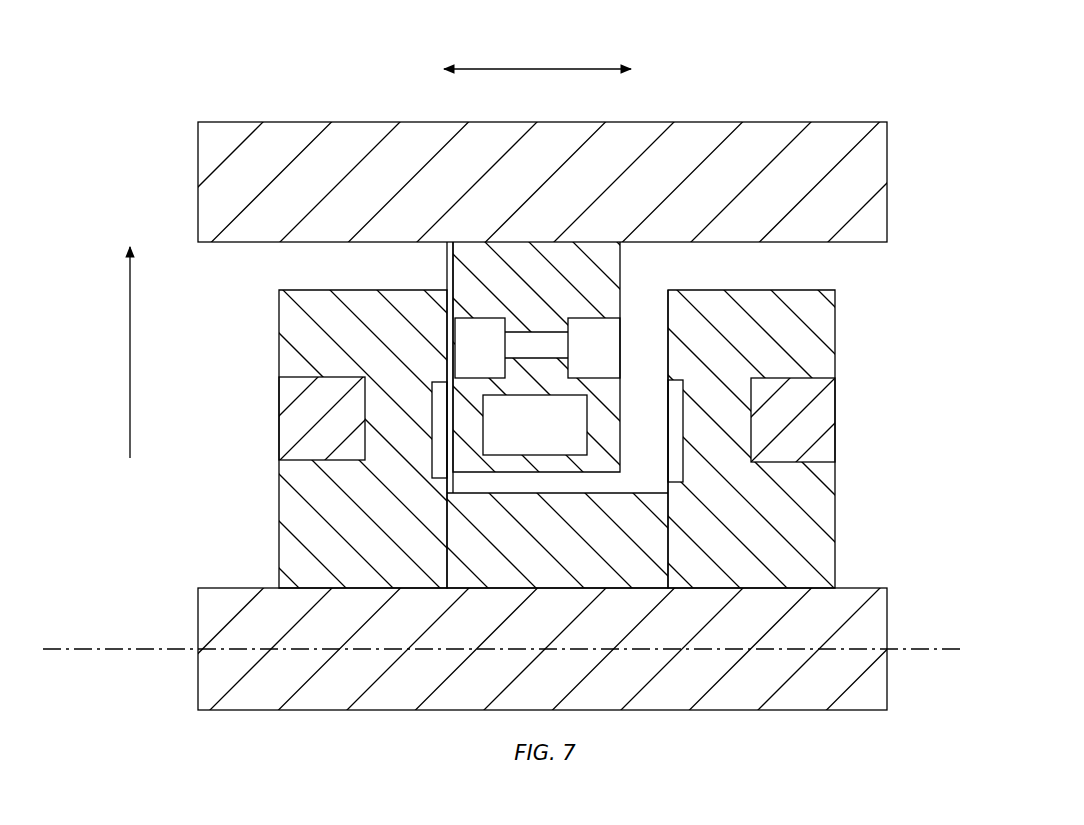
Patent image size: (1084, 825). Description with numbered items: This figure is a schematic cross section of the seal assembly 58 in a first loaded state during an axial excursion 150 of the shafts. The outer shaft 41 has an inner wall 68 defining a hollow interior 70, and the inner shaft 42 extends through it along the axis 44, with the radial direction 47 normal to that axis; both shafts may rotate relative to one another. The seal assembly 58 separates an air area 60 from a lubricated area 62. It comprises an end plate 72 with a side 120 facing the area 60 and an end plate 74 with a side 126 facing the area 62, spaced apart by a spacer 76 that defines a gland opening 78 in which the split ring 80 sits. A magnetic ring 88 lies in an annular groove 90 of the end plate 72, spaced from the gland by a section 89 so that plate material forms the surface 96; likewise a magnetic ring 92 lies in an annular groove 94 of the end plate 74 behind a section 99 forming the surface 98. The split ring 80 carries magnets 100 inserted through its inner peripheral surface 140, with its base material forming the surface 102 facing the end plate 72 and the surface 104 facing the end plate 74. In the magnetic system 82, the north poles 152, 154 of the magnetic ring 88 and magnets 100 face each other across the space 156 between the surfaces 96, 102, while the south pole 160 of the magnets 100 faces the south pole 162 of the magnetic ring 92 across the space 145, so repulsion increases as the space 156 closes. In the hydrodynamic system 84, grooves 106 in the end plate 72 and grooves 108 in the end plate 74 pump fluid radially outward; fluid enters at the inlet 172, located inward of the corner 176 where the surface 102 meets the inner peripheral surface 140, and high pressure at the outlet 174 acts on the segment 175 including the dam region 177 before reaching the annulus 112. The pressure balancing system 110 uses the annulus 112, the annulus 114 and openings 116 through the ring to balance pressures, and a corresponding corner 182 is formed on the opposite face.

The shaft 41 is at (400, 210).
The shaft 42 is at (492, 625).
The axis 44 is at (135, 649).
The radial direction 47 is at (130, 380).
The seal assembly 58 is at (230, 275).
The area 60 is at (212, 310).
The area 62 is at (857, 318).
The inner wall 68 is at (884, 243).
The hollow interior 70 is at (332, 258).
The end plate 72 is at (279, 535).
The end plate 74 is at (842, 540).
The spacer 76 is at (532, 545).
The gland opening 78 is at (366, 245).
The split ring 80 is at (465, 290).
The magnetic system 82 is at (845, 385).
The hydrodynamic system 84 is at (628, 327).
The magnetic ring 88 is at (279, 390).
The section 89 is at (279, 332).
The annular groove 90 is at (362, 443).
The magnetic ring 92 is at (835, 412).
The annular groove 94 is at (752, 462).
The surface 96 is at (447, 527).
The surface 98 is at (668, 522).
The section 99 is at (699, 435).
The magnet 100 is at (526, 422).
The surface 102 is at (447, 390).
The surface 104 is at (619, 405).
The grooves 106 is at (440, 530).
The grooves 108 is at (668, 432).
The pressure balancing system 110 is at (527, 330).
The annulus 112 is at (463, 345).
The annulus 114 is at (577, 345).
The opening 116 is at (557, 337).
The side 120 is at (279, 488).
The side 126 is at (835, 500).
The inner peripheral surface 140 is at (577, 525).
The space 145 is at (625, 362).
The axial excursion 150 is at (545, 69).
The pole 152 is at (343, 418).
The pole 154 is at (493, 455).
The space 156 is at (449, 290).
The south pole 160 is at (573, 455).
The south pole 162 is at (775, 428).
The inlet 172 is at (447, 522).
The outlet 174 is at (447, 388).
The segment 175 is at (447, 403).
The corner 176 is at (450, 493).
The dam region 177 is at (447, 377).
The corner 182 is at (635, 467).